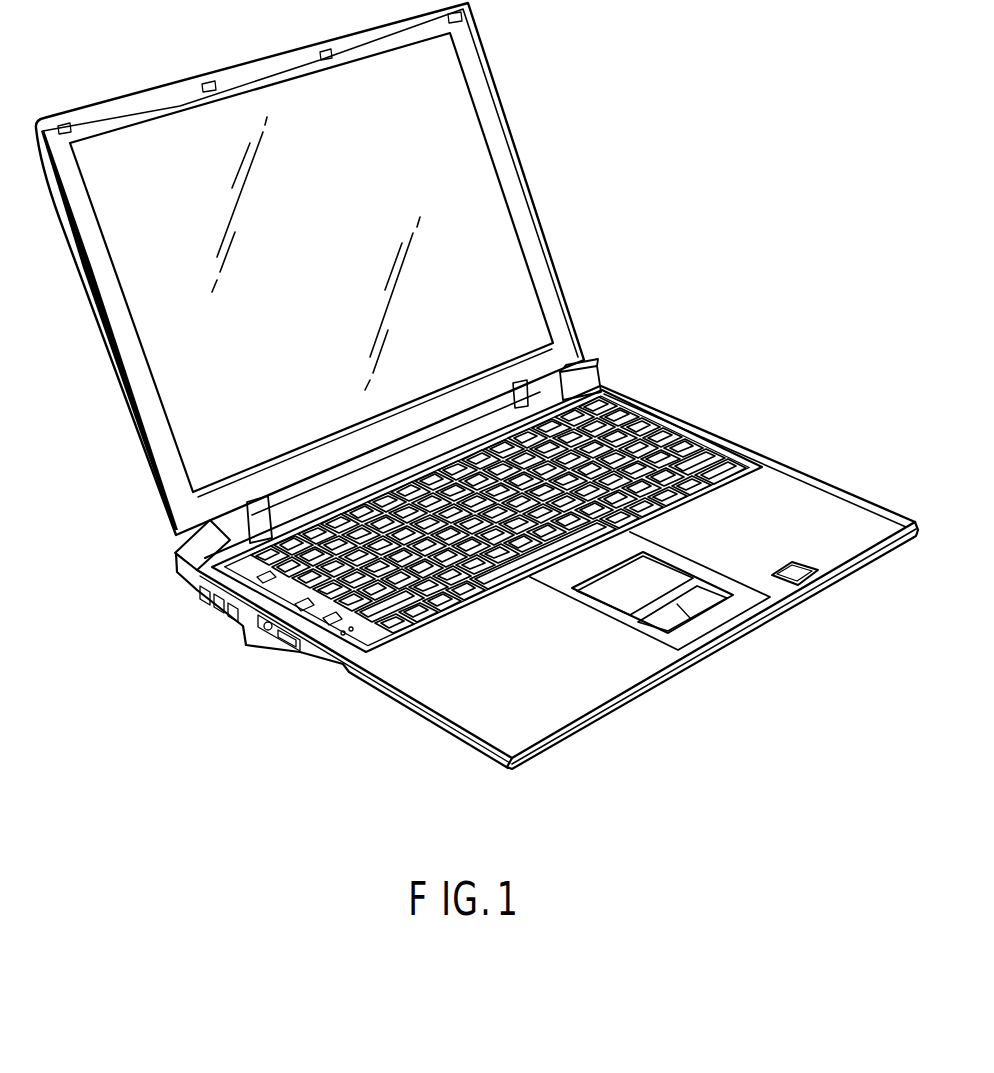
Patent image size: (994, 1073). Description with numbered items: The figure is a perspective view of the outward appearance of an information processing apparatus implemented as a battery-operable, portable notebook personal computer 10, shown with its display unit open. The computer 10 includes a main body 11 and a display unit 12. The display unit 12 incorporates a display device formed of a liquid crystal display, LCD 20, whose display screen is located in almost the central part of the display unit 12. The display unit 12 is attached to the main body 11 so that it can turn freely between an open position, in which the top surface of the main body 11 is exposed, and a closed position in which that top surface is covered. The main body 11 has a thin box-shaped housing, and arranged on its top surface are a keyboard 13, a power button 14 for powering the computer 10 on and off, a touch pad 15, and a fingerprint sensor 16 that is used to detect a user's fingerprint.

The notebook personal computer 10 is at (652, 383).
The main body 11 is at (546, 577).
The display unit 12 is at (318, 273).
The keyboard 13 is at (487, 521).
The power button 14 is at (250, 592).
The touch pad 15 is at (617, 597).
The fingerprint sensor 16 is at (796, 560).
The liquid crystal display (LCD) 20 is at (311, 265).